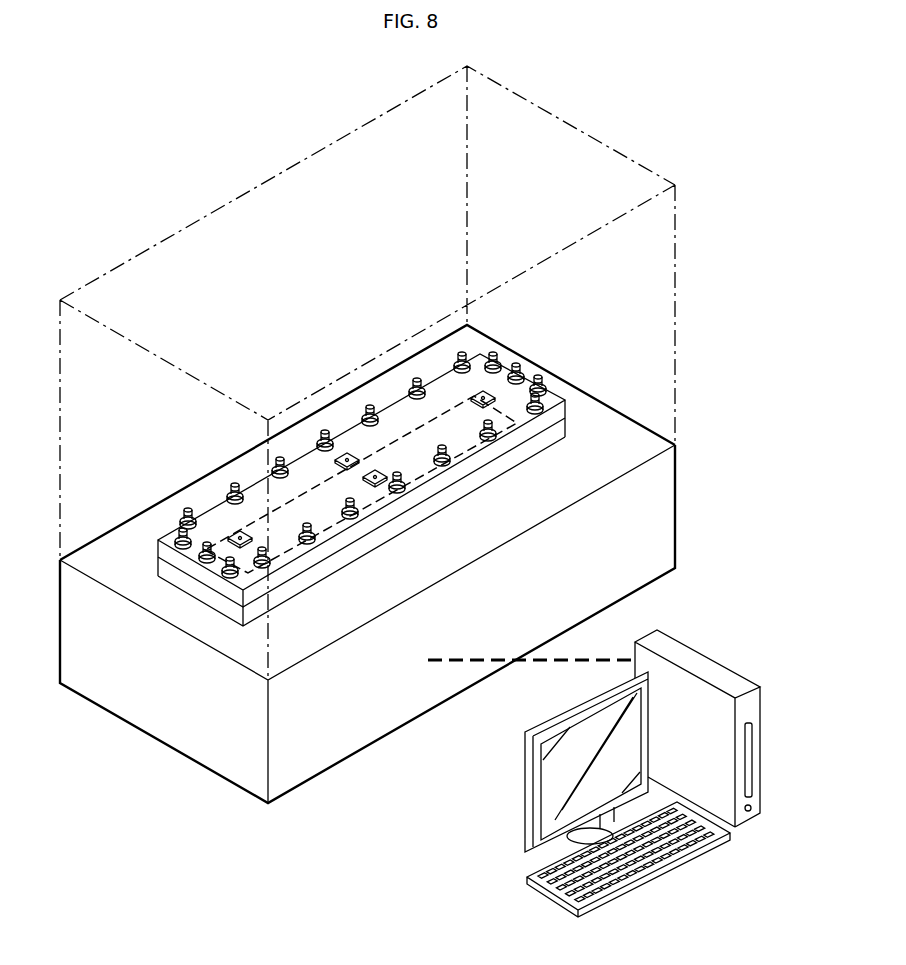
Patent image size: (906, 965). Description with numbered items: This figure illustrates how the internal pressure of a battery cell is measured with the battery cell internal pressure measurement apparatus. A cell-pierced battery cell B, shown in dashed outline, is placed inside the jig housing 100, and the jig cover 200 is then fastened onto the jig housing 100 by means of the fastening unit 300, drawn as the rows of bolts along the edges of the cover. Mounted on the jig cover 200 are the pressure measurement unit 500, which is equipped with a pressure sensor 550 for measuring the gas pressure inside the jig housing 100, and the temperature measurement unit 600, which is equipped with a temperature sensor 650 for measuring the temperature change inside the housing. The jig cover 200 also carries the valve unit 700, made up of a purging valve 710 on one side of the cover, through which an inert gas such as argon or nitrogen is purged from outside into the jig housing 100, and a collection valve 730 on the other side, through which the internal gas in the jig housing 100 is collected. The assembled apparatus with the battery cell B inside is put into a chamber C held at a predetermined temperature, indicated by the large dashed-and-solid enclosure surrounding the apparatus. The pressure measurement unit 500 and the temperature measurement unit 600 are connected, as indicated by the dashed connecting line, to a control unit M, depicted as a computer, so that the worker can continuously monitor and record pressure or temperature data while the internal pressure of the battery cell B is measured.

The jig housing 100 is at (560, 433).
The jig cover 200 is at (561, 412).
The fastening unit 300 is at (416, 388).
The pressure measurement unit 500 is at (431, 527).
The pressure sensor 550 is at (375, 484).
The temperature measurement unit 600 is at (325, 405).
The temperature sensor 650 is at (344, 457).
The valve unit 700 is at (516, 356).
The purging valve 710 is at (239, 534).
The collection valve 730 is at (488, 392).
The battery cell B is at (258, 507).
The chamber C is at (148, 751).
The control unit M is at (714, 646).